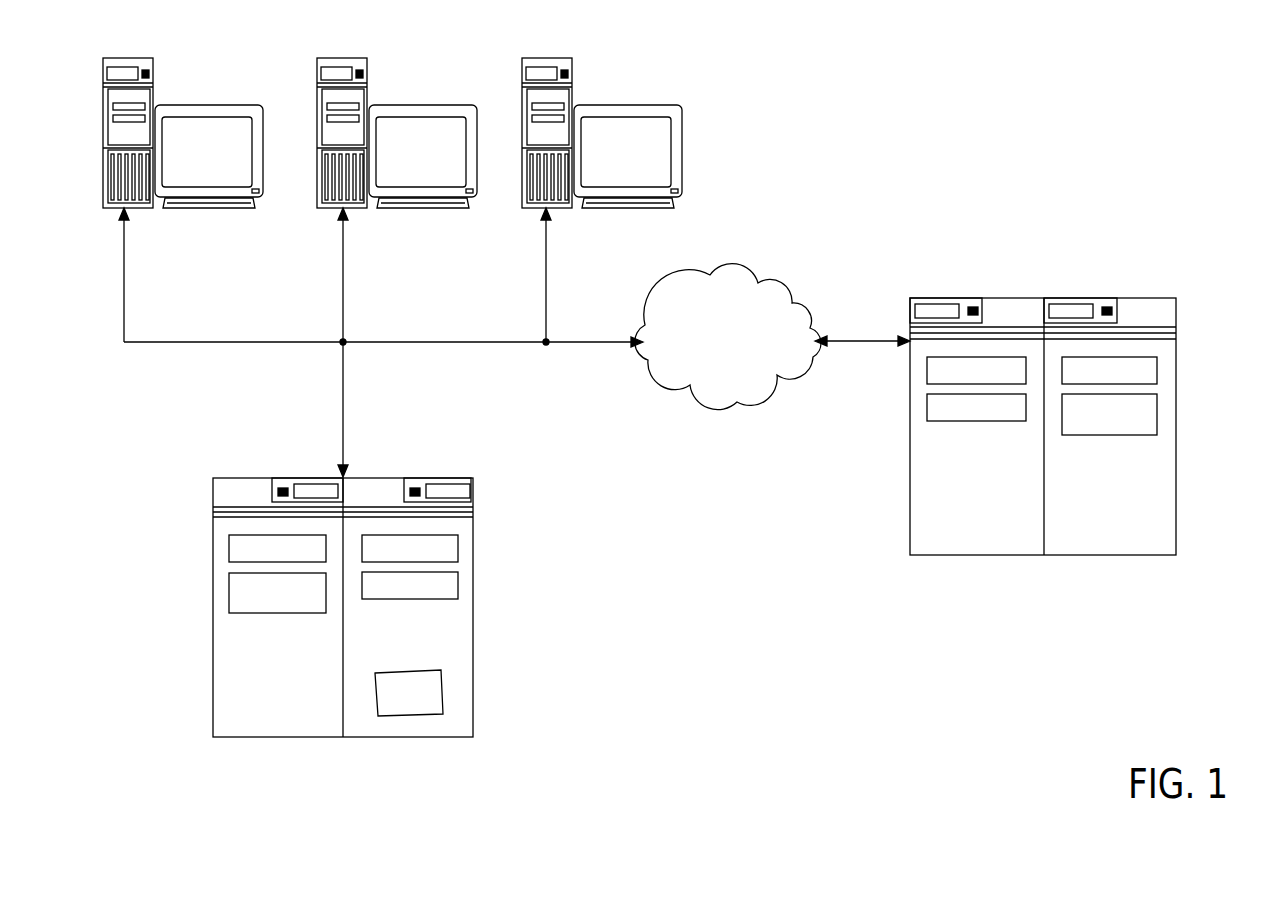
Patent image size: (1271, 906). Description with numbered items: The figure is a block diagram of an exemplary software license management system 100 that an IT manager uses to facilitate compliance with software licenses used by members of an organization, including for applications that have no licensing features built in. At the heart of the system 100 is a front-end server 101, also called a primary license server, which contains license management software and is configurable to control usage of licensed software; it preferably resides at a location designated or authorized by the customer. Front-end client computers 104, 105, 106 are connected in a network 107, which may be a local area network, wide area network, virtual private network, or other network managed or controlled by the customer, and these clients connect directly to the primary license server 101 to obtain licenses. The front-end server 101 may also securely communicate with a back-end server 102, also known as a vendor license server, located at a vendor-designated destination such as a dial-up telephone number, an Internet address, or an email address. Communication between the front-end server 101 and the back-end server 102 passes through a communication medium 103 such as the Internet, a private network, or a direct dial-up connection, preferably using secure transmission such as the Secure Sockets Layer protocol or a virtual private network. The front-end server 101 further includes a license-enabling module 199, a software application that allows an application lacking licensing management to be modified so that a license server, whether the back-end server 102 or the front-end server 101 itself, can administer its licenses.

The system 100 is at (907, 37).
The front-end server 101 is at (343, 581).
The back-end server 102 is at (1127, 298).
The communication medium 103 is at (711, 351).
The computer 104 is at (234, 105).
The computer 105 is at (448, 105).
The computer 106 is at (658, 105).
The network 107 is at (431, 342).
The license-enabling module 199 is at (388, 705).